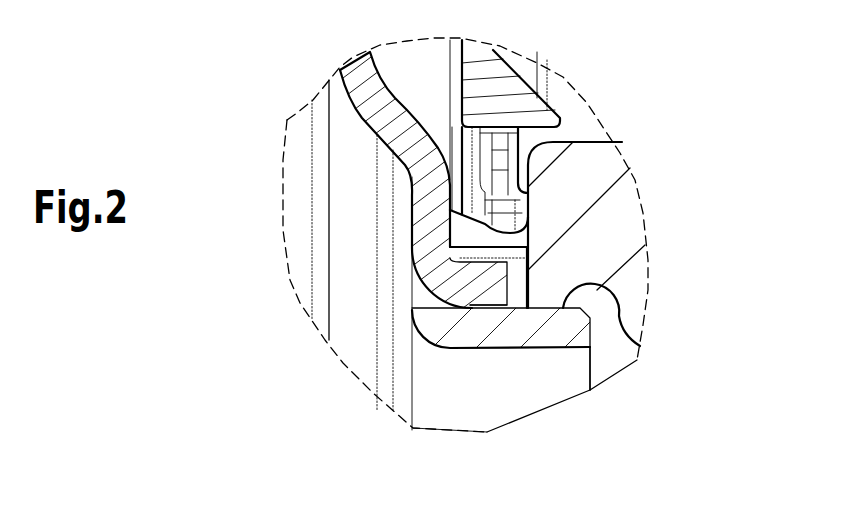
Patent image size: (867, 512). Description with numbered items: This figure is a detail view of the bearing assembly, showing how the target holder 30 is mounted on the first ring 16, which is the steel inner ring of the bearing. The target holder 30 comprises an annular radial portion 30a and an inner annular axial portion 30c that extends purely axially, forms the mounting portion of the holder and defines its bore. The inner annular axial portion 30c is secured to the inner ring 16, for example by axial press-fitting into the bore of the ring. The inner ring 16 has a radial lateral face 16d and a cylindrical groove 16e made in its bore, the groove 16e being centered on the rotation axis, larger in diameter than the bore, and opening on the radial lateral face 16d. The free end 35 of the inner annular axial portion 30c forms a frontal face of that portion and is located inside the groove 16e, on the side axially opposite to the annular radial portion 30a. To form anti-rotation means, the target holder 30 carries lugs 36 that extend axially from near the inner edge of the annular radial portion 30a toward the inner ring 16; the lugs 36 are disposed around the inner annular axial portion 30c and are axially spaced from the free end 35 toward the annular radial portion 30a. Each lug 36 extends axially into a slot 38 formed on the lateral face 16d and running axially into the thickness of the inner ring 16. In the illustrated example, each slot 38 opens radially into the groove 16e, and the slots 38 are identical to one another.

The first ring 16 is at (594, 163).
The radial lateral face 16d is at (440, 227).
The cylindrical groove 16e is at (563, 326).
The target holder 30 is at (352, 121).
The annular radial portion 30a is at (430, 178).
The inner annular axial portion 30c is at (513, 328).
The free end 35 is at (537, 312).
The lugs 36 is at (505, 285).
The slot 38 is at (523, 280).